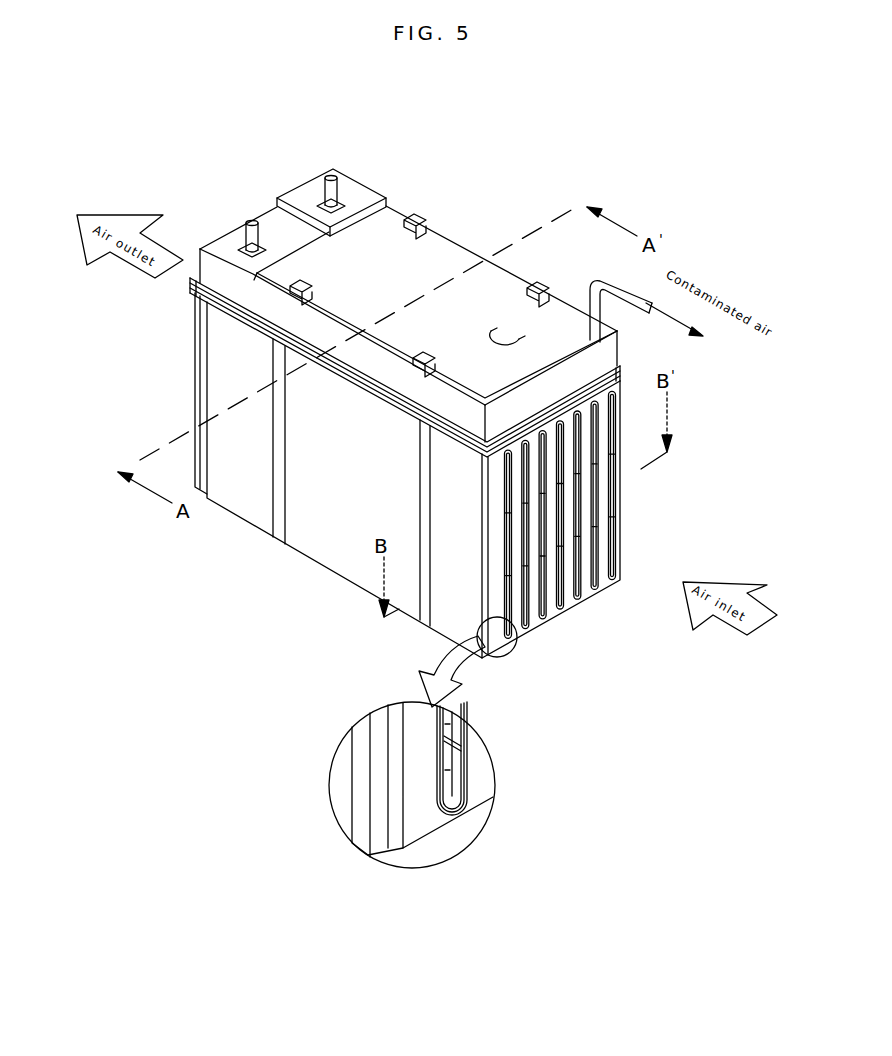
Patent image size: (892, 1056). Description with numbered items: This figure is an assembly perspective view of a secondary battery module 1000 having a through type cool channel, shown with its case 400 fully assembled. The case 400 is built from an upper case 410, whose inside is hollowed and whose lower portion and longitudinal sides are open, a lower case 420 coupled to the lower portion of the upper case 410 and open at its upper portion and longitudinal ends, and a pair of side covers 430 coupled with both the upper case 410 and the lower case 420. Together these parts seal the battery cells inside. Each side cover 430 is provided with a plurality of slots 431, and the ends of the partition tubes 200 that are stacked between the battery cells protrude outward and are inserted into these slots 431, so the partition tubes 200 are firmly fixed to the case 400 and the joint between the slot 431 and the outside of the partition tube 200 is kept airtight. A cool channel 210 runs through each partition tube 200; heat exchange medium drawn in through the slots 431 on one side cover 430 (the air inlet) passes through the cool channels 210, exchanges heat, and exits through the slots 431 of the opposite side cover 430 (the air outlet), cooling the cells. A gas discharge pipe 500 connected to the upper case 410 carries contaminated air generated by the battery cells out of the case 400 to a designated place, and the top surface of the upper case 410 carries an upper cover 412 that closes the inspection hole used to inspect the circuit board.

The secondary battery module 1000 is at (202, 150).
The case 400 is at (790, 754).
The upper case 410 is at (566, 309).
The upper cover 412 is at (450, 243).
The lower case 420 is at (320, 554).
The side cover 430 is at (198, 392).
The slot 431 is at (608, 492).
The cool channel 210 is at (616, 552).
The partition tube 200 is at (465, 783).
The gas discharge pipe 500 is at (640, 292).